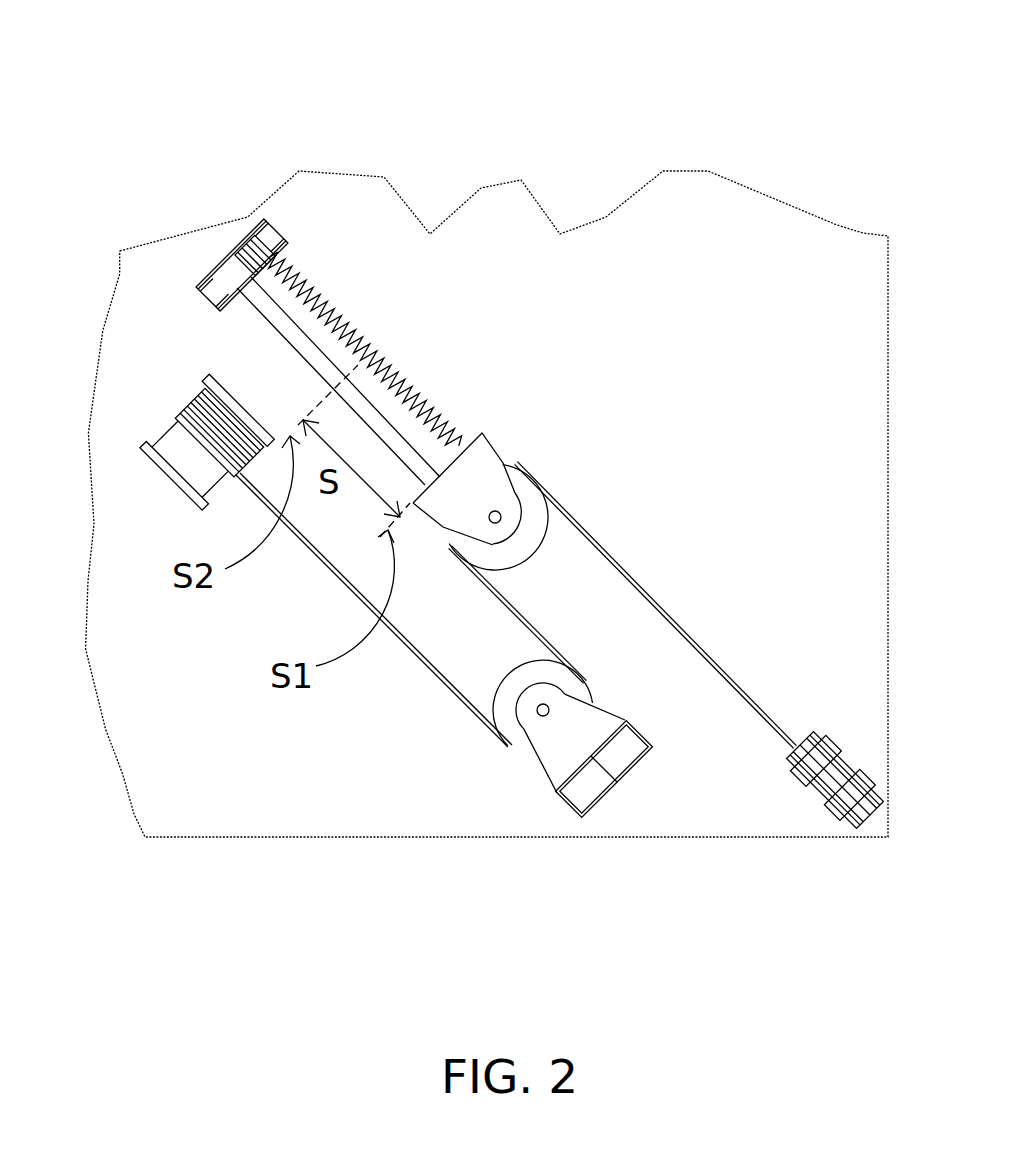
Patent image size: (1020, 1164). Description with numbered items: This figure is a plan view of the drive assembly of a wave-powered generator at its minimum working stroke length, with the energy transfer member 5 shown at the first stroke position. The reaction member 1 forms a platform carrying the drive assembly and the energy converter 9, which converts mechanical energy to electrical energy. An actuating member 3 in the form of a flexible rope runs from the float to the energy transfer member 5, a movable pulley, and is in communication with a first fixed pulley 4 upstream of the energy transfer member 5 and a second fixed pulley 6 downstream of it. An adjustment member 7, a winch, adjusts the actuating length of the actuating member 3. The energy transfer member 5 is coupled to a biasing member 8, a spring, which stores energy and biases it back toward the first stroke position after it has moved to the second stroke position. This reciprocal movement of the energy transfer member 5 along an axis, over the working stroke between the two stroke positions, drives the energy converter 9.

The reaction member 1 is at (320, 776).
The actuating member 3 is at (613, 551).
The first fixed pulley 4 is at (848, 772).
The energy transfer member 5 is at (485, 467).
The second fixed pulley 6 is at (652, 747).
The adjustment member 7 is at (193, 405).
The biasing member 8 is at (342, 316).
The energy converter 9 is at (302, 353).